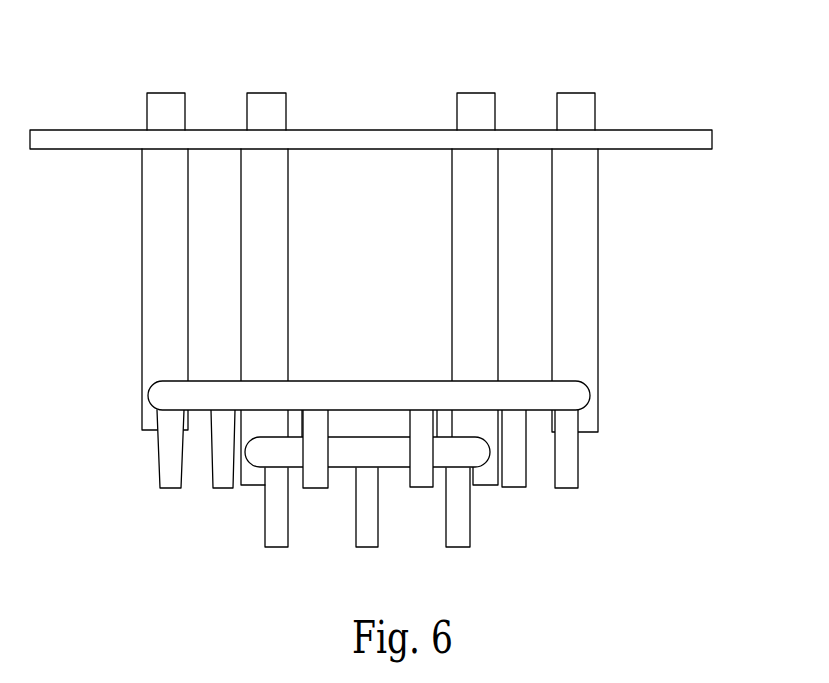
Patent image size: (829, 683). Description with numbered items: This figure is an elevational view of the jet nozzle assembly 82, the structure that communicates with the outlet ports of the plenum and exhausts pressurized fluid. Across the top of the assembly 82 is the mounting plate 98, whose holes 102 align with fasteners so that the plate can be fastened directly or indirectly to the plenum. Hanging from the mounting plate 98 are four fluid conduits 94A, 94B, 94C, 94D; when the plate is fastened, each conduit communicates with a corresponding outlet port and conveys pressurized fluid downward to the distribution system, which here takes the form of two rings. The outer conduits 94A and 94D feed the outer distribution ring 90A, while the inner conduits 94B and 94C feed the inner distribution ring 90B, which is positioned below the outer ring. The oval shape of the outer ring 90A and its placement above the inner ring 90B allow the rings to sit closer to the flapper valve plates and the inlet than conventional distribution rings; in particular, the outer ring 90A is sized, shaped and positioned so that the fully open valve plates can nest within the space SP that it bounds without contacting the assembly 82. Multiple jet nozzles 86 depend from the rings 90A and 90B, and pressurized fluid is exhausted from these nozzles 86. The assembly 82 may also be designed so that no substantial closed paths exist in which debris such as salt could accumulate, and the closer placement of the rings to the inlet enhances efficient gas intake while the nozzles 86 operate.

The nozzle assembly 82 is at (678, 55).
The mounting plate 98 is at (353, 129).
The holes 102 is at (168, 93).
The outer conduit 94A is at (153, 238).
The inner conduit 94B is at (287, 228).
The inner conduit 94C is at (453, 263).
The outer conduit 94D is at (592, 272).
The space SP is at (212, 330).
The outer distribution ring 90A is at (343, 380).
The inner distribution ring 90B is at (338, 457).
The jet nozzles 86 is at (383, 501).